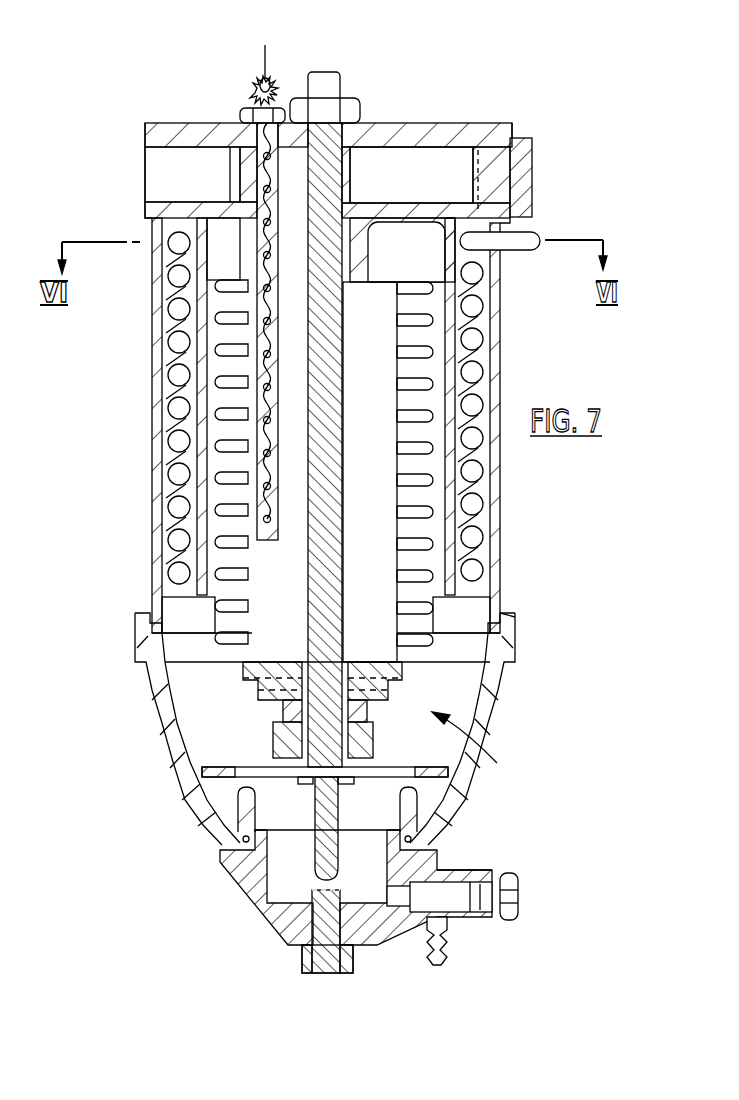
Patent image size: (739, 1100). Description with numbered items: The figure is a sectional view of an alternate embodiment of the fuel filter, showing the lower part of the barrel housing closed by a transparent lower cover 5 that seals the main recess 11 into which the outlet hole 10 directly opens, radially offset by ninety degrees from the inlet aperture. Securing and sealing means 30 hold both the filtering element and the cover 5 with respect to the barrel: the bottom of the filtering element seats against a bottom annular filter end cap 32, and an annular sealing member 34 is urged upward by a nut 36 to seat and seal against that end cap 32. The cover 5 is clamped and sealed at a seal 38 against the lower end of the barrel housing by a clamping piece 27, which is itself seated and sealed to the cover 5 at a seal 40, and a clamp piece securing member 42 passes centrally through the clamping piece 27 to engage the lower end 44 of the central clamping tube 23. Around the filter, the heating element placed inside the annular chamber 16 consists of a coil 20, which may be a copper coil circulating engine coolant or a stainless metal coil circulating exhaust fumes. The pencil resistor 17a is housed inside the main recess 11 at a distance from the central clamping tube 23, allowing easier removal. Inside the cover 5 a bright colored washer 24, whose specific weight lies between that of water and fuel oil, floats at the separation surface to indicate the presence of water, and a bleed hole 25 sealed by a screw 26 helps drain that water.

The lower cover 5 is at (483, 712).
The outlet hole 10 is at (173, 174).
The main recess 11 is at (228, 260).
The annular chamber 16 is at (480, 487).
The pencil resistor 17a is at (277, 541).
The coil 20 is at (473, 308).
The central clamping tube 23 is at (325, 86).
The bright colored washer 24 is at (423, 767).
The bleed hole 25 is at (450, 935).
The screw 26 is at (510, 893).
The clamping piece 27 is at (285, 918).
The securing and sealing means 30 is at (478, 747).
The bottom annular filter end cap 32 is at (253, 680).
The annular sealing member 34 is at (293, 710).
The nut 36 is at (287, 743).
The seal 38 is at (508, 644).
The seal 40 is at (405, 816).
The clamp piece securing member 42 is at (302, 962).
The lower end of the central clamping tube 44 is at (318, 804).